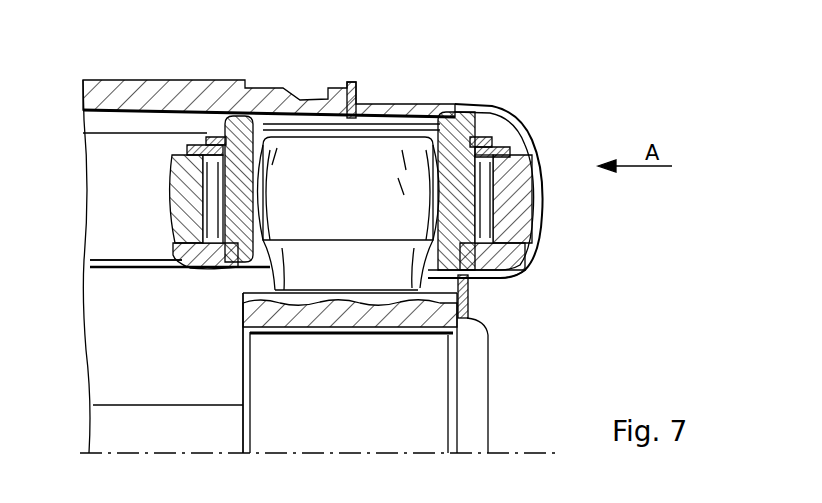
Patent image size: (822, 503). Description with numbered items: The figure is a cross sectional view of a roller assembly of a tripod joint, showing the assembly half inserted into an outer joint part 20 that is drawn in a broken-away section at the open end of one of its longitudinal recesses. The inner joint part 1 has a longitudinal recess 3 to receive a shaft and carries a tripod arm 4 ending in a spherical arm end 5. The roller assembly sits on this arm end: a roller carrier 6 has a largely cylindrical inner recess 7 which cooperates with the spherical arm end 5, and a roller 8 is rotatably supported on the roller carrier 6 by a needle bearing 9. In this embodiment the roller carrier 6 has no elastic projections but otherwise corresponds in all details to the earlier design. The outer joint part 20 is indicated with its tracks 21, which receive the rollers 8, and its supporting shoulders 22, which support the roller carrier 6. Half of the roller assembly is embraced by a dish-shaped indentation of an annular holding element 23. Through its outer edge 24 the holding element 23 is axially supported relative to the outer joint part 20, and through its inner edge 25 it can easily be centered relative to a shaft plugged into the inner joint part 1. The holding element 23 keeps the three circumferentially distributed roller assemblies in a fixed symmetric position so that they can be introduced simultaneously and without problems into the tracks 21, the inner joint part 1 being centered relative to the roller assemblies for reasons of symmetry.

The inner joint part 1 is at (242, 308).
The longitudinal recess 3 is at (418, 337).
The tripod arm 4 is at (412, 276).
The spherical arm end 5 is at (425, 213).
The roller carrier 6 is at (446, 128).
The inner recess 7 is at (437, 142).
The roller 8 is at (512, 168).
The needle bearing 9 is at (482, 202).
The outer joint part 20 is at (127, 90).
The tracks 21 is at (178, 135).
The supporting shoulders 22 is at (140, 265).
The holding element 23 is at (535, 262).
The outer edge 24 is at (357, 93).
The inner edge 25 is at (158, 171).